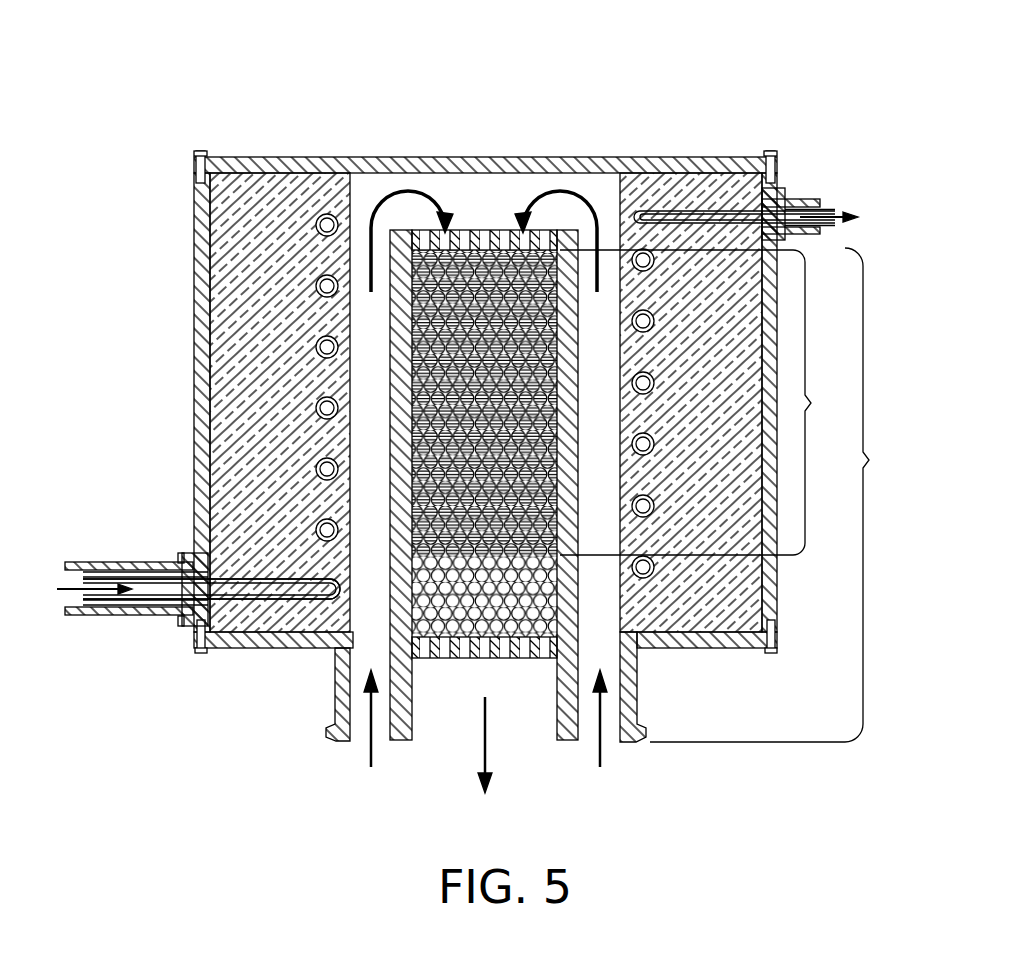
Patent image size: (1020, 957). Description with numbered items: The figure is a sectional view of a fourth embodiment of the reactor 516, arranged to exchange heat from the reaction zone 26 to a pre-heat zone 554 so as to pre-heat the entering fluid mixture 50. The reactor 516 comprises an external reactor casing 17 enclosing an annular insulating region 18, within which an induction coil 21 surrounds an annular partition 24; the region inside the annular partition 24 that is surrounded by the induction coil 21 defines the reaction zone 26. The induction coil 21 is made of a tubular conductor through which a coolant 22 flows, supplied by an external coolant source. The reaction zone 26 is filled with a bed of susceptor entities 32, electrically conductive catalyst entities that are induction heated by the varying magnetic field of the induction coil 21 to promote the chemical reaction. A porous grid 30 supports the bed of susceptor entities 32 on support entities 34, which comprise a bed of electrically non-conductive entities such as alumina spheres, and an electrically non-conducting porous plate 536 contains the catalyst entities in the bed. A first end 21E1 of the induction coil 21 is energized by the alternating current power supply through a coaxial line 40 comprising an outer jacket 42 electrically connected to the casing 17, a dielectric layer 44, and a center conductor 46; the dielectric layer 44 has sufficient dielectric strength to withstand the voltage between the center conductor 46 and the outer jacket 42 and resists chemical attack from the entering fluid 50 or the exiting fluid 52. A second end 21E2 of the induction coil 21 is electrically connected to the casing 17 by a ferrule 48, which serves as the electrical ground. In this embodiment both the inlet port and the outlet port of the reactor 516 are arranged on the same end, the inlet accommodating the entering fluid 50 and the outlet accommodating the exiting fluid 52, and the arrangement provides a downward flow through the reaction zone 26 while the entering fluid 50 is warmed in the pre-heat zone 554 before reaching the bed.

The reactor 516 is at (213, 78).
The external reactor casing 17 is at (207, 218).
The annular insulating region 18 is at (290, 208).
The induction coil 21 is at (328, 395).
The first end of induction coil 21E1 is at (263, 580).
The second end of induction coil 21E2 is at (712, 205).
The coolant 22 is at (118, 575).
The annular partition 24 is at (403, 232).
The reaction zone 26 is at (707, 402).
The porous grid 30 is at (473, 658).
The bed of susceptor entities 32 is at (495, 248).
The support entities 34 is at (524, 624).
The coaxial line 40 is at (192, 641).
The outer jacket 42 is at (160, 613).
The dielectric layer 44 is at (152, 600).
The center conductor 46 is at (150, 580).
The ferrule 48 is at (803, 200).
The entering fluid 50 is at (371, 752).
The exiting fluid 52 is at (486, 742).
The top retaining screen 536 is at (477, 248).
The pre-heat zone 554 is at (787, 495).